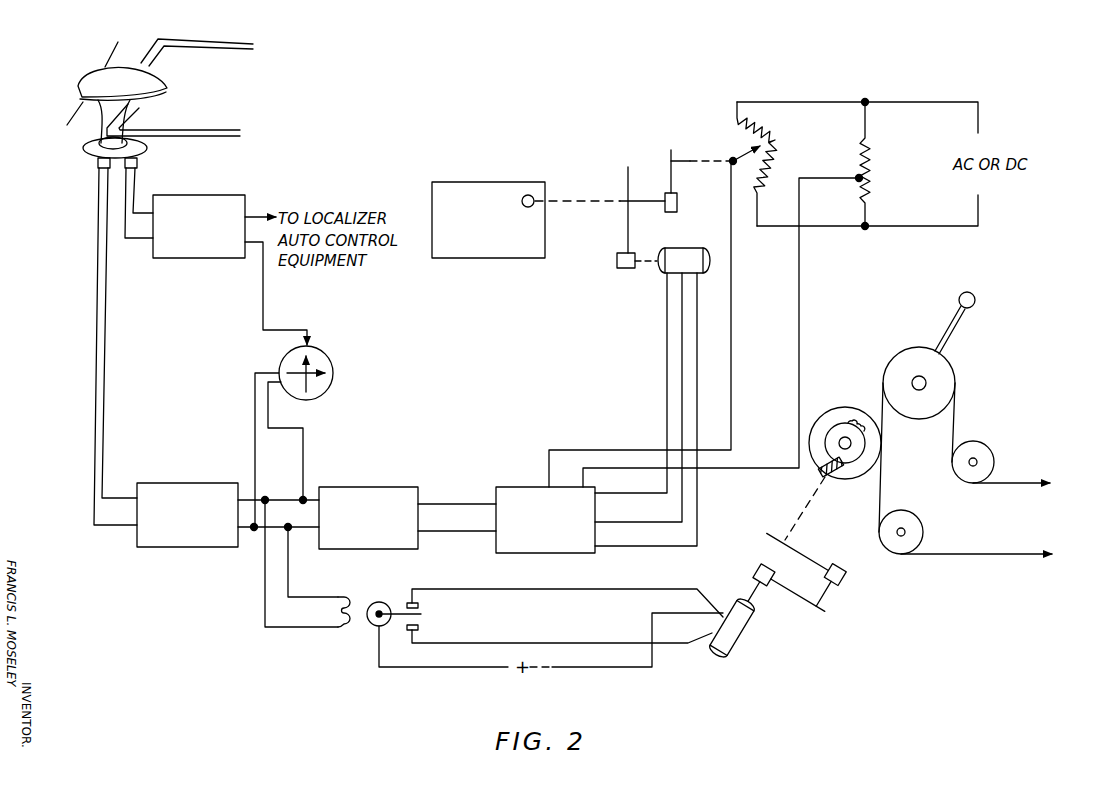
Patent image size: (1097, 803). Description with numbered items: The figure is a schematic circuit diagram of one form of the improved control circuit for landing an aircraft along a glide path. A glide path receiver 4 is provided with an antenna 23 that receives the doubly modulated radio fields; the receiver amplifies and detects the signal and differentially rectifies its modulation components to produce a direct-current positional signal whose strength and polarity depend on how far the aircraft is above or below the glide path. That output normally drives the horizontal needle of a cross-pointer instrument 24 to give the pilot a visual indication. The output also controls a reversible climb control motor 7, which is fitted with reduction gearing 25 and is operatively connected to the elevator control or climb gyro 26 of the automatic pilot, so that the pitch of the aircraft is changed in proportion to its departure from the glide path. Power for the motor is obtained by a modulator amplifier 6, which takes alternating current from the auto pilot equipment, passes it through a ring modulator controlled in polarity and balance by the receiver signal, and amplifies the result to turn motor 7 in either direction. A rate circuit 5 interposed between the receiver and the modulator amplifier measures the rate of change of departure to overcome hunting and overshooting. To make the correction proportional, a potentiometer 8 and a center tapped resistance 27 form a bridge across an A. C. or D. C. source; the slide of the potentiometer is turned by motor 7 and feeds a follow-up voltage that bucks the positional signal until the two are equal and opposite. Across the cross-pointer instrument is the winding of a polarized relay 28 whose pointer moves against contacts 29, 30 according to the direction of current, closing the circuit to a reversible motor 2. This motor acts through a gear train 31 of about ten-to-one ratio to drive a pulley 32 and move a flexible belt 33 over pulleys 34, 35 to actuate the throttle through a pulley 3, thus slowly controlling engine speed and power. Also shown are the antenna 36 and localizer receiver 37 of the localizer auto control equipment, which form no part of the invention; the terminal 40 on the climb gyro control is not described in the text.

The reversible motor 2 is at (745, 633).
The pulley 3 is at (947, 382).
The glide path receiver 4 is at (193, 487).
The rate circuit 5 is at (370, 493).
The modulator amplifier 6 is at (527, 492).
The reversible climb control motor 7 is at (673, 270).
The potentiometer 8 is at (777, 152).
The antenna 23 is at (103, 63).
The cross-pointer instrument 24 is at (315, 360).
The reduction gearing 25 is at (625, 238).
The climb gyro 26 is at (473, 198).
The center tapped resistance 27 is at (866, 190).
The polarized relay 28 is at (372, 627).
The contact 29 is at (420, 606).
The contact 30 is at (420, 628).
The gear train 31 is at (757, 570).
The pulley 32 is at (853, 415).
The flexible belt 33 is at (957, 425).
The pulley 34 is at (915, 523).
The pulley 35 is at (983, 450).
The antenna 36 is at (168, 130).
The localizer receiver 37 is at (200, 202).
The terminal 40 is at (545, 178).